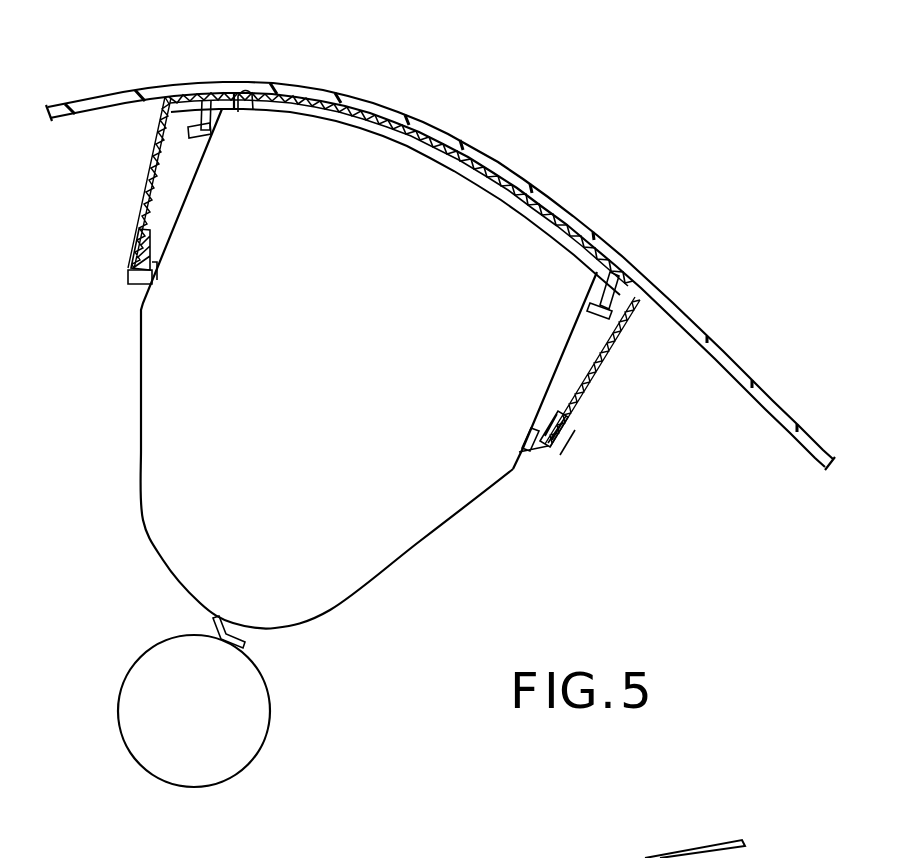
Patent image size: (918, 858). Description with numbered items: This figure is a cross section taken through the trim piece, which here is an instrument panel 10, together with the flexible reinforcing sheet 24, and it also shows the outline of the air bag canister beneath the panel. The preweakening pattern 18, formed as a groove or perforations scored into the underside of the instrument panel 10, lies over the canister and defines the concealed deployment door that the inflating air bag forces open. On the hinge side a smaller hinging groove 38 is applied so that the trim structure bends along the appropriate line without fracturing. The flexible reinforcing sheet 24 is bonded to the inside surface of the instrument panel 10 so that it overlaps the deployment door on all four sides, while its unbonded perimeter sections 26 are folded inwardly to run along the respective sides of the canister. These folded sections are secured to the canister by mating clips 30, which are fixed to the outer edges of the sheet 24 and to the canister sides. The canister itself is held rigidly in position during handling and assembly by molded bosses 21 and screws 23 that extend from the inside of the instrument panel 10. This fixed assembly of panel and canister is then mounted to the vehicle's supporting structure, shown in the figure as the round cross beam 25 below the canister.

The instrument panel 10 is at (90, 100).
The preweakening pattern 18 is at (562, 232).
The molded bosses 21 is at (186, 84).
The screws 23 is at (196, 135).
The flexible reinforcing sheet 24 is at (622, 279).
The cross beam 25 is at (270, 690).
The unbonded perimeter sections 26 is at (577, 430).
The mating clips 30 is at (128, 282).
The hinging groove 38 is at (238, 110).